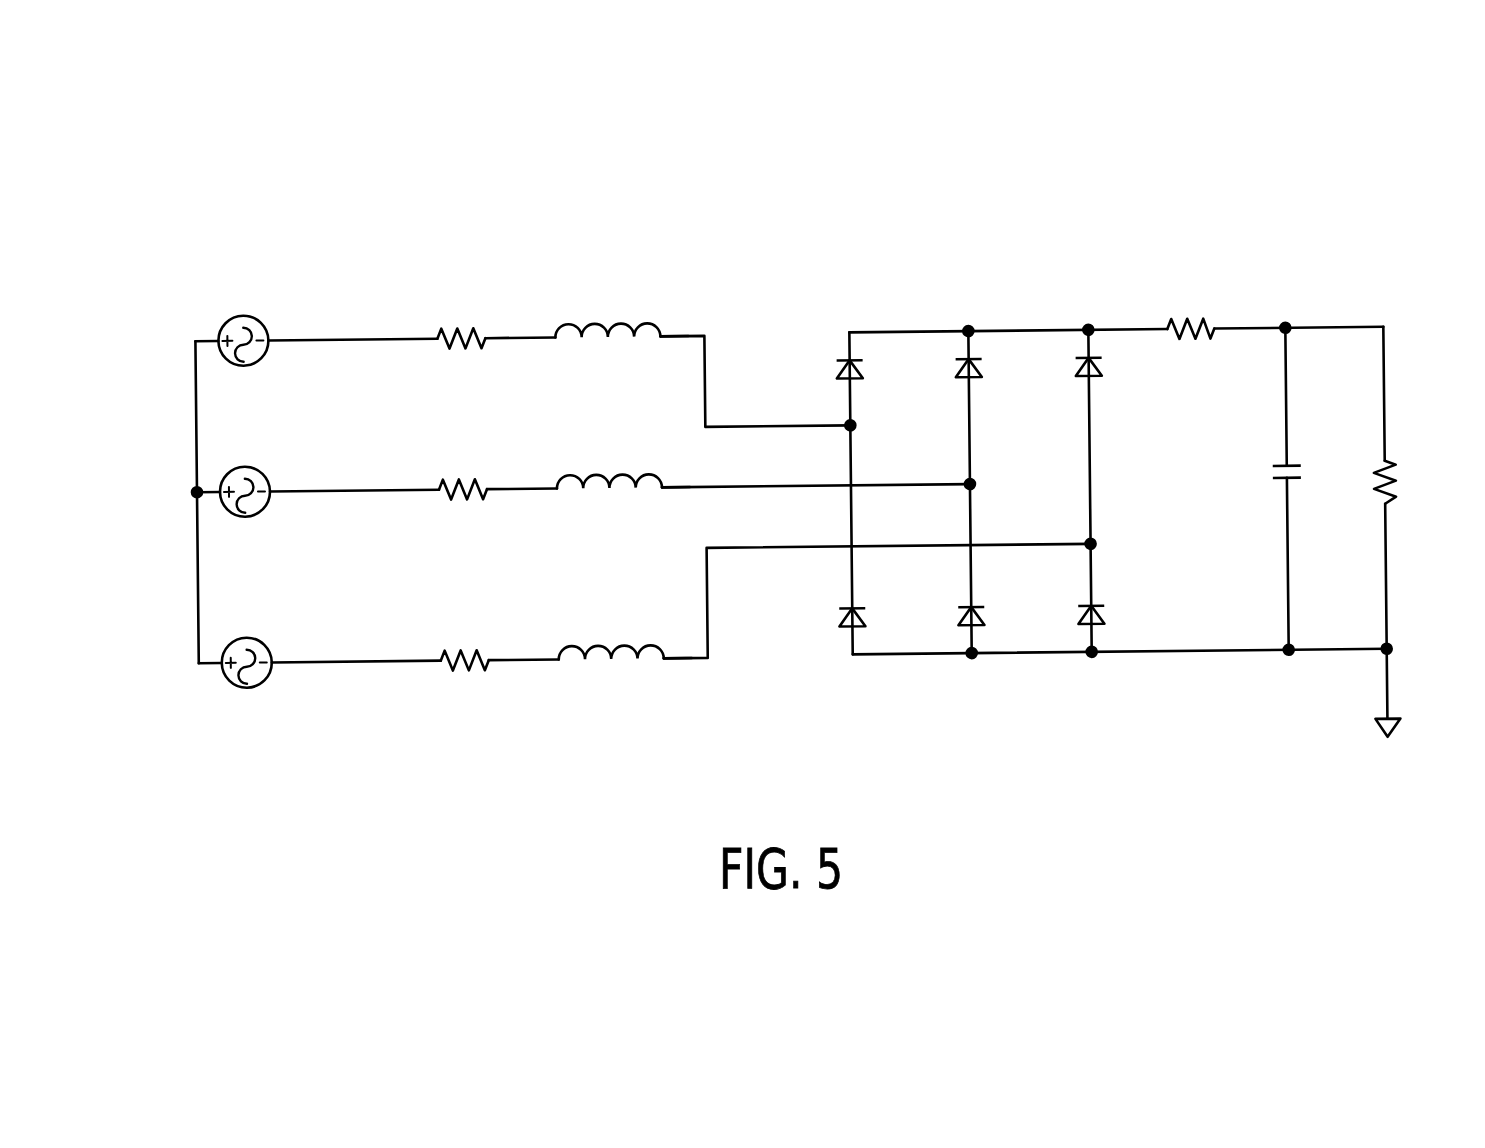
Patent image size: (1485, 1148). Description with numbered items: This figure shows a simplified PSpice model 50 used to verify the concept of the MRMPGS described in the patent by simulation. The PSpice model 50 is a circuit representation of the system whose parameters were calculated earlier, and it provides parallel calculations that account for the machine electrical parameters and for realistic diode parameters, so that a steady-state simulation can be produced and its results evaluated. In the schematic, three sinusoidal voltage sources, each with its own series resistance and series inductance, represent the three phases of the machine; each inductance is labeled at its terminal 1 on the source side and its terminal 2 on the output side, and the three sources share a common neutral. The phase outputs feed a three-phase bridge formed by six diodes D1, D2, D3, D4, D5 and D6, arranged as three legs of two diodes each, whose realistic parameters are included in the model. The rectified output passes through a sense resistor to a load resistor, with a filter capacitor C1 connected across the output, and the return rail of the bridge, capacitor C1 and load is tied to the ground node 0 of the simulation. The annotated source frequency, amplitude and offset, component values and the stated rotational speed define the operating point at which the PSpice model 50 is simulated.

The PSpice model 50 is at (824, 190).
The ground node 0 is at (1395, 736).
The inductor terminal 1 is at (601, 481).
The inductor terminal 2 is at (676, 481).
The rectifier diode D1 is at (866, 361).
The rectifier diode D2 is at (869, 610).
The rectifier diode D3 is at (985, 361).
The rectifier diode D4 is at (988, 609).
The rectifier diode D5 is at (1107, 362).
The rectifier diode D6 is at (1108, 609).
The filter capacitor C1 is at (1305, 453).